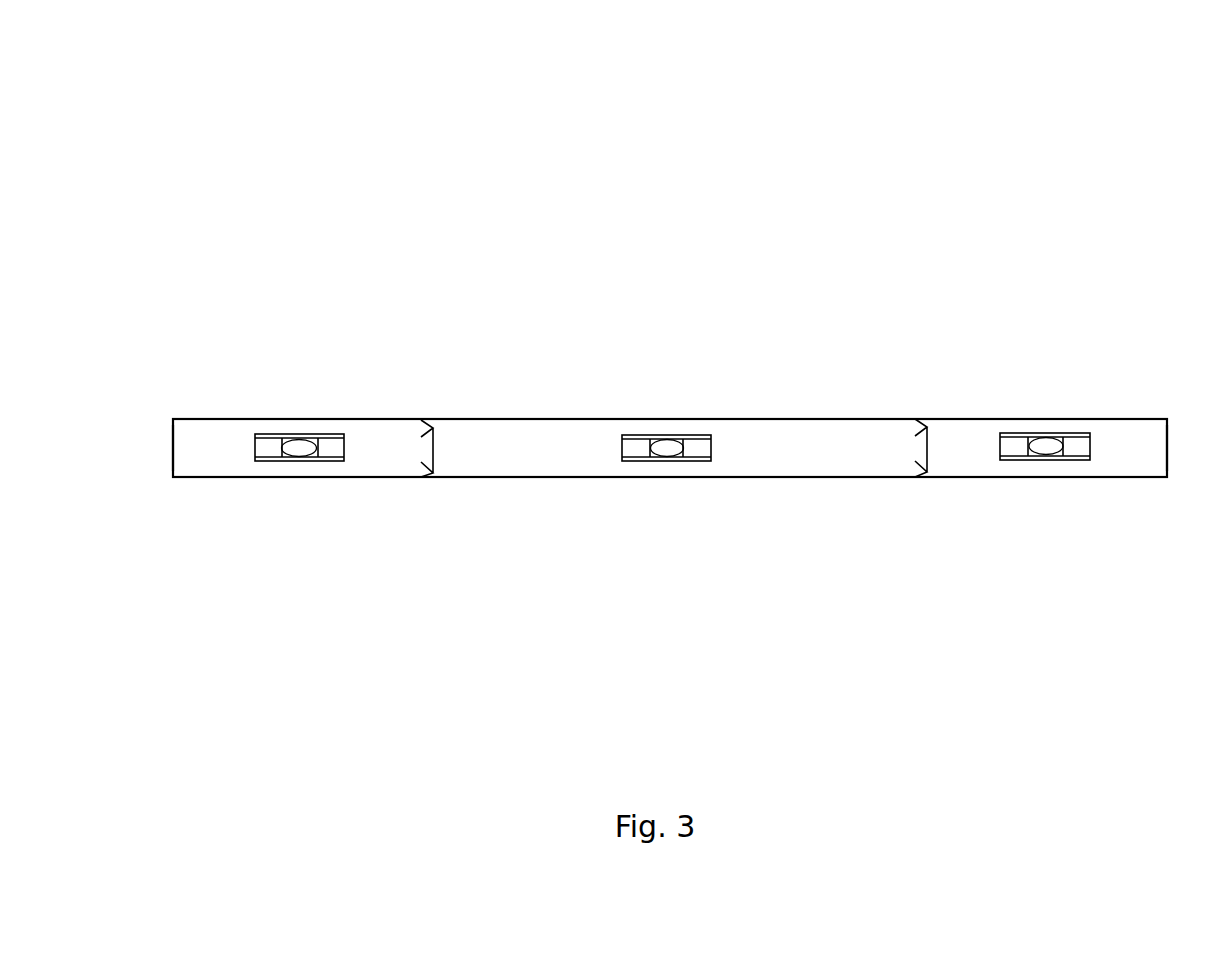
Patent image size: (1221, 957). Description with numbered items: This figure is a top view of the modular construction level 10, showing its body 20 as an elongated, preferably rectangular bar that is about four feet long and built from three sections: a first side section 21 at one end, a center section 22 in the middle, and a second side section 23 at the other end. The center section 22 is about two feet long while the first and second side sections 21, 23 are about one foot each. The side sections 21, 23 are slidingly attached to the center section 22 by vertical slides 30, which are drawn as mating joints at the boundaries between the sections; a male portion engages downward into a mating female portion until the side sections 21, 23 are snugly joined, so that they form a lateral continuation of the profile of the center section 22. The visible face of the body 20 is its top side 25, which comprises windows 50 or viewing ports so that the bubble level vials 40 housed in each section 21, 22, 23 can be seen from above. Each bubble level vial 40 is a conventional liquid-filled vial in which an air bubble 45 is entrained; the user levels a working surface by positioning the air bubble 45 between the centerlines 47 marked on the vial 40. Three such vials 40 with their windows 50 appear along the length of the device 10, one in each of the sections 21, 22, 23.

The modular construction level 10 is at (1077, 132).
The body 20 is at (817, 393).
The first side section 21 is at (192, 450).
The center section 22 is at (490, 440).
The second side section 23 is at (1142, 436).
The top side 25 is at (853, 460).
The vertical slides 30 is at (422, 421).
The bubble level vials 40 is at (338, 448).
The air bubble 45 is at (300, 446).
The centerlines 47 is at (317, 458).
The windows 50 is at (325, 440).